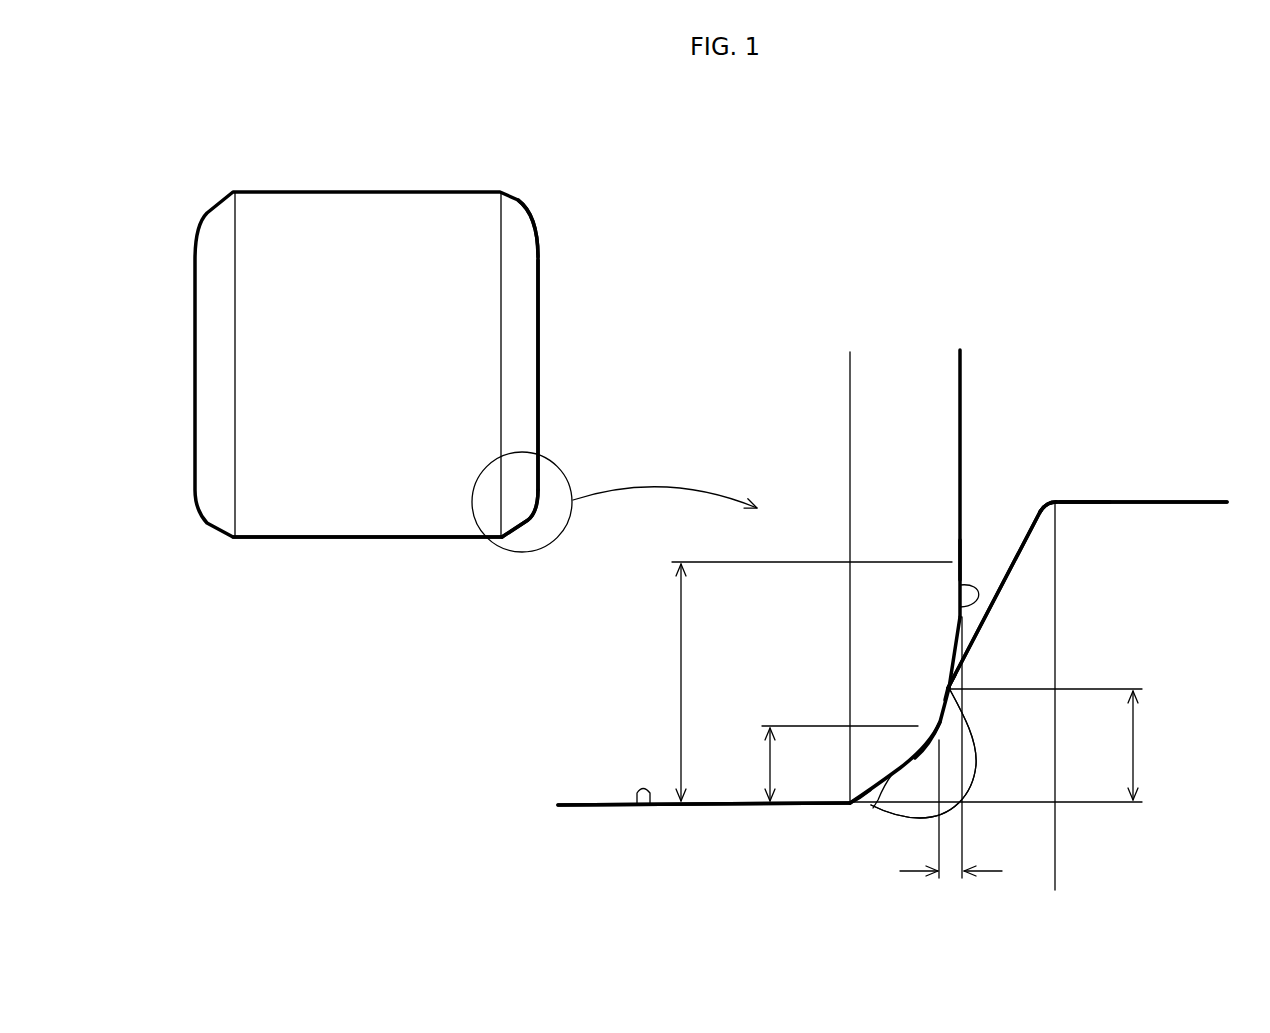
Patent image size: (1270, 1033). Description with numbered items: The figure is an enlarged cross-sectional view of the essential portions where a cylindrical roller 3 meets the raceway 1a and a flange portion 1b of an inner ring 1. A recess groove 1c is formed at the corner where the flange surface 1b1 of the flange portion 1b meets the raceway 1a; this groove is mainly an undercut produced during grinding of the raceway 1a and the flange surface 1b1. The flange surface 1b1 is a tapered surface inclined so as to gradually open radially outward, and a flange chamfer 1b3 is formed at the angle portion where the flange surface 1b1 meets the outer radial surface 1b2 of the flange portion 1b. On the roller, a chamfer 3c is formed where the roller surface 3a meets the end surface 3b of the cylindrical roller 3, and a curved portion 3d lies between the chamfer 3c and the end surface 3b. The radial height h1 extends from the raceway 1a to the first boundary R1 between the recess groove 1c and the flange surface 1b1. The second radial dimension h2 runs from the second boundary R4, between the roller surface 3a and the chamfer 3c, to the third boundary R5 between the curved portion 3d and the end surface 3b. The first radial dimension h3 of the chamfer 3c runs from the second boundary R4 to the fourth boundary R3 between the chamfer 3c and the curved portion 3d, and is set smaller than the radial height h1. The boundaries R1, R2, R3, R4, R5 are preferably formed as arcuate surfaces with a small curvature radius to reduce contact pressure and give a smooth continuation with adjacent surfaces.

The inner ring 1 is at (1176, 492).
The raceway 1a is at (638, 806).
The flange portion 1b is at (1135, 520).
The flange surface 1b1 is at (1003, 568).
The outer radial surface 1b2 is at (1098, 502).
The flange chamfer 1b3 is at (1043, 510).
The recess groove 1c is at (909, 808).
The cylindrical roller 3 is at (542, 212).
The roller surface 3a is at (393, 540).
The end surface 3b is at (540, 320).
The chamfer 3c is at (523, 520).
The curved portion 3d is at (537, 492).
The first boundary R1 is at (953, 686).
The boundary R2 is at (1046, 518).
The fourth boundary R3 is at (928, 720).
The second boundary R4 is at (847, 800).
The third boundary R5 is at (955, 558).
The radial height h1 is at (1058, 744).
The second radial dimension h2 is at (812, 681).
The first radial dimension h3 is at (840, 763).